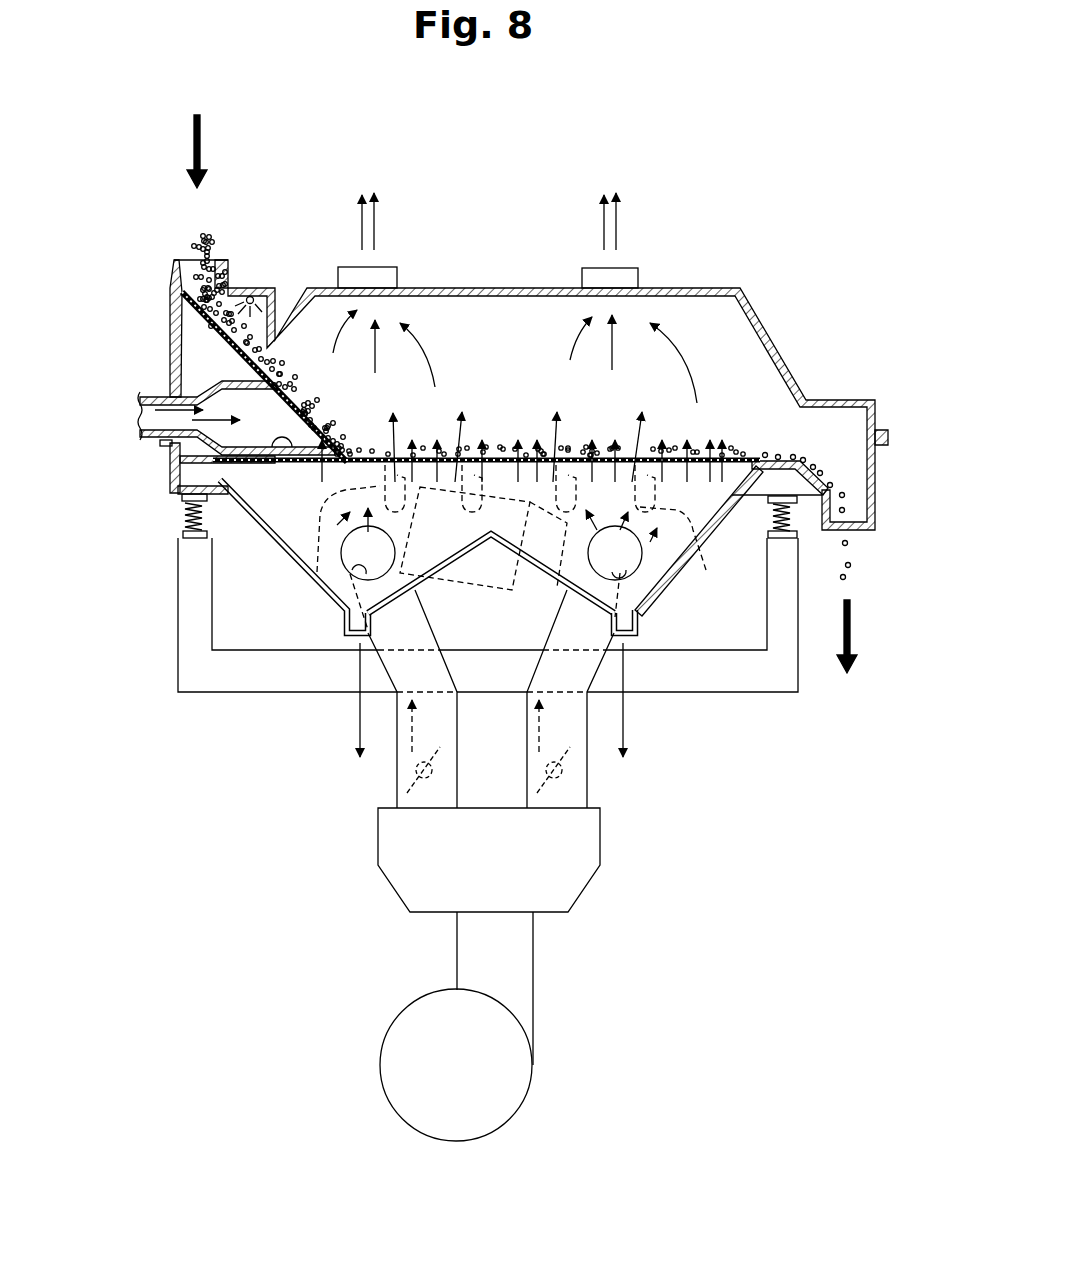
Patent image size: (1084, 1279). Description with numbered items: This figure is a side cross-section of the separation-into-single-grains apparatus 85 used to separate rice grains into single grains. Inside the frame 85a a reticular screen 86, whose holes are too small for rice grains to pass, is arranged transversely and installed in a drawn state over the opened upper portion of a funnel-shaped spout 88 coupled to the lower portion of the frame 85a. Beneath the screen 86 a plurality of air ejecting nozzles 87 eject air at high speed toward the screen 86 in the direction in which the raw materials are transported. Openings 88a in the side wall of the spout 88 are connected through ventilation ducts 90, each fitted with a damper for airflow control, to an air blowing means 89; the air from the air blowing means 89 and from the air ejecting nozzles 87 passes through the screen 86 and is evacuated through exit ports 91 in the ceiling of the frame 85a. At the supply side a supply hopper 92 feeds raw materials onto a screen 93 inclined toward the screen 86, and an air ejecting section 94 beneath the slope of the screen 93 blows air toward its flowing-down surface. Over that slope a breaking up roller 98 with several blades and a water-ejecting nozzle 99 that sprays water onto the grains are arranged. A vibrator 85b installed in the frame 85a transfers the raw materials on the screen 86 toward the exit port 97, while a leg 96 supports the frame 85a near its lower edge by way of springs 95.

The separation-into-single-grains apparatus 85 is at (752, 176).
The frame 85a is at (172, 346).
The vibrator 85b is at (484, 578).
The reticular screen 86 is at (297, 560).
The air ejecting nozzle 87 is at (349, 572).
The spout 88 is at (677, 577).
The opening 88a is at (355, 580).
The air blowing means 89 is at (525, 1055).
The ventilation duct 90 is at (582, 786).
The exit port 91 is at (400, 265).
The supply hopper 92 is at (178, 260).
The inclined screen 93 is at (203, 332).
The air ejecting section 94 is at (285, 452).
The spring 95 is at (183, 512).
The leg 96 is at (757, 683).
The exit port 97 is at (877, 512).
The breaking up roller 98 is at (143, 393).
The water-ejecting nozzle 99 is at (248, 295).